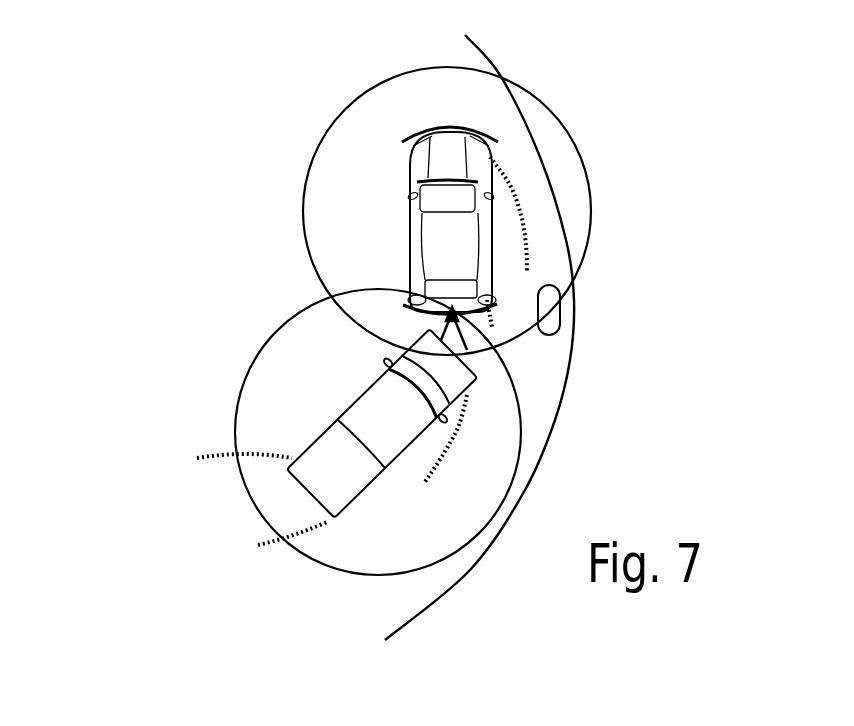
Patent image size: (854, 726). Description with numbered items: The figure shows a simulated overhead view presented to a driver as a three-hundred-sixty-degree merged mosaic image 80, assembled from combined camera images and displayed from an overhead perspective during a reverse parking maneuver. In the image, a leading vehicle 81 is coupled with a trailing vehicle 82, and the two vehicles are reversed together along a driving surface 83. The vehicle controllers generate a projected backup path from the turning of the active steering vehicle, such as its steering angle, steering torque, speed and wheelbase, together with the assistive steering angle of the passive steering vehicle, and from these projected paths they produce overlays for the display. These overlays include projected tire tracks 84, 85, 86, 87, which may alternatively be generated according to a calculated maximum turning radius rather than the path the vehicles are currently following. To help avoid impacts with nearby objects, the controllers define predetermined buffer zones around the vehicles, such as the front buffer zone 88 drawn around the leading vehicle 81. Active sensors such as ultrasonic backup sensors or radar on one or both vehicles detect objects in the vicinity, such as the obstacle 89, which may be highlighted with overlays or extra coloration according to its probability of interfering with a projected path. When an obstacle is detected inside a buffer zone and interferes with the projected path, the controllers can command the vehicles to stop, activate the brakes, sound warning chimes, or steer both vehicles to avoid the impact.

The merged mosaic image 80 is at (153, 537).
The leading vehicle 81 is at (408, 184).
The trailing vehicle 82 is at (357, 395).
The driving surface 83 is at (561, 408).
The projected tire track 84 is at (516, 185).
The projected tire track 85 is at (493, 318).
The projected tire track 86 is at (278, 548).
The projected tire track 87 is at (453, 450).
The front buffer zone 88 is at (413, 130).
The obstacle 89 is at (560, 330).